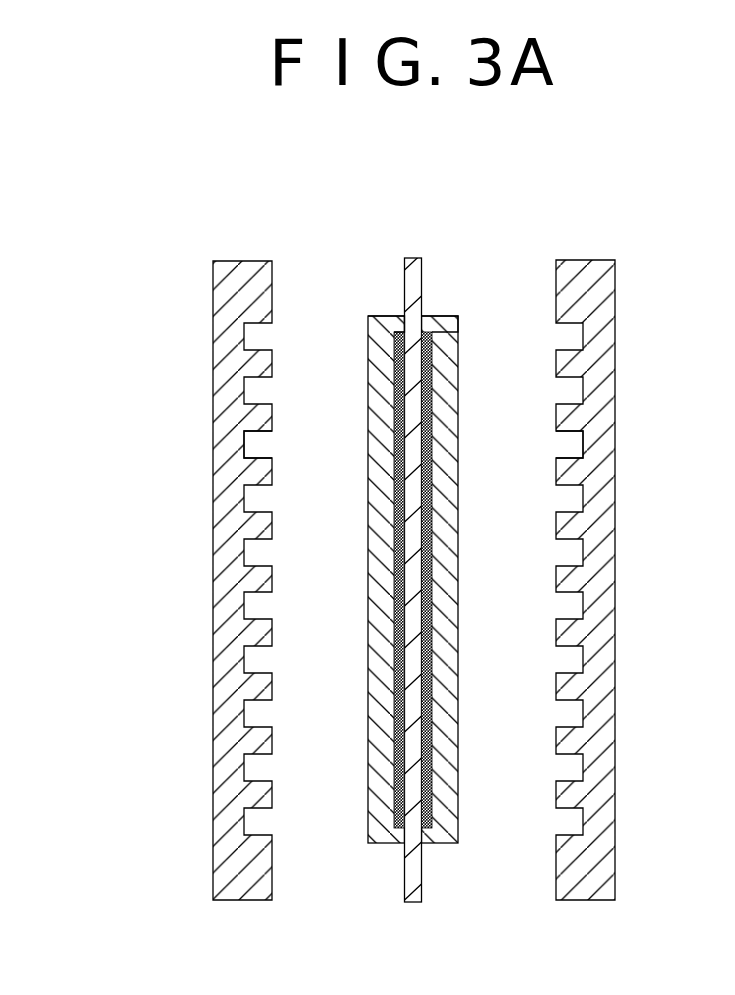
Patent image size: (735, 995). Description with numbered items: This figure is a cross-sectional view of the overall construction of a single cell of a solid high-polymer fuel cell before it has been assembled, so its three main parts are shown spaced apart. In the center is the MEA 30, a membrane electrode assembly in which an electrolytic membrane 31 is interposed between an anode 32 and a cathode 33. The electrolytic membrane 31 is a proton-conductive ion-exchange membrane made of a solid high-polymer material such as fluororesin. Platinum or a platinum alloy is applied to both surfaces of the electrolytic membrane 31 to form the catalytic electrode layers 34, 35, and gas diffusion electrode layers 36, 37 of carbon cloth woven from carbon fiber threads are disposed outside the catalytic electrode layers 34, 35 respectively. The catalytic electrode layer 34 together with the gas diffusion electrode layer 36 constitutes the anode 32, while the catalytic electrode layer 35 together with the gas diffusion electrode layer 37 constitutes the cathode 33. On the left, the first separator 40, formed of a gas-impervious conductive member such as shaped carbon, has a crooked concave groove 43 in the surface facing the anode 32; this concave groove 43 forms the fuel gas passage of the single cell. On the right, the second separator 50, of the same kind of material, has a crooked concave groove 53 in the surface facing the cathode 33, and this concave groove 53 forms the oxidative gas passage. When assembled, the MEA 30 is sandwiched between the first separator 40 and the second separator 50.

The MEA 30 is at (411, 530).
The electrolytic membrane 31 is at (414, 258).
The anode 32 is at (380, 315).
The cathode 33 is at (446, 315).
The catalytic electrode layer 34 is at (398, 410).
The catalytic electrode layer 35 is at (430, 410).
The gas diffusion electrode layer 36 is at (378, 458).
The gas diffusion electrode layer 37 is at (448, 458).
The first separator 40 is at (232, 261).
The concave groove 43 is at (245, 440).
The second separator 50 is at (599, 260).
The concave groove 53 is at (585, 440).